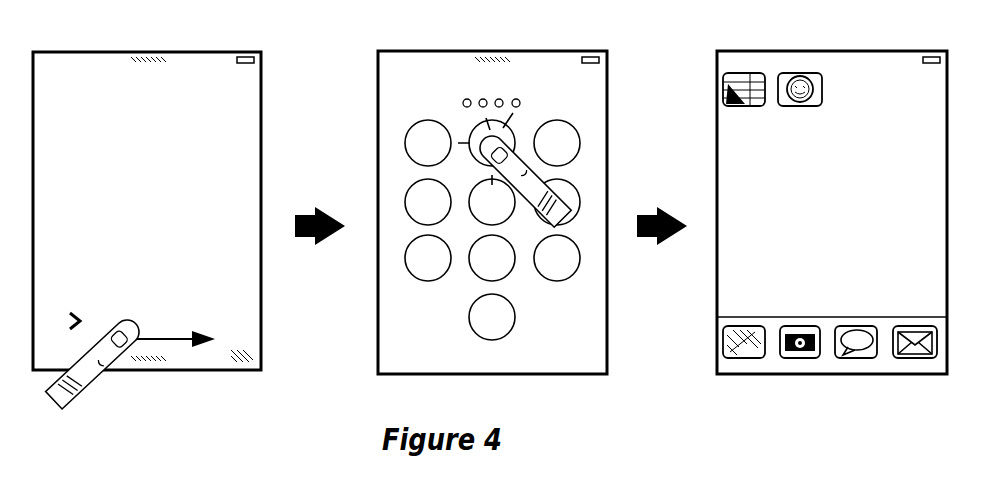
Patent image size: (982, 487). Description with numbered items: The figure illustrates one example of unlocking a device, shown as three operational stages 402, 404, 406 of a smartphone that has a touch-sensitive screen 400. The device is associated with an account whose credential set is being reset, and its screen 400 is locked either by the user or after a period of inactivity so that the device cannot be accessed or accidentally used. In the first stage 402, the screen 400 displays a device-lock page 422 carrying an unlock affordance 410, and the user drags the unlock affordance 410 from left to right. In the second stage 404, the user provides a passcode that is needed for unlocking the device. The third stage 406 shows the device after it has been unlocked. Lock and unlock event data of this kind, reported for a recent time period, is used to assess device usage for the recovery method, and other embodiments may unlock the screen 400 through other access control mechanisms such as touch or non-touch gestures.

The touch-sensitive screen 400 is at (263, 53).
The first operational stage 402 is at (175, 215).
The second operational stage 404 is at (597, 395).
The third operational stage 406 is at (940, 395).
The unlock affordance 410 is at (143, 312).
The device-lock page 422 is at (245, 117).